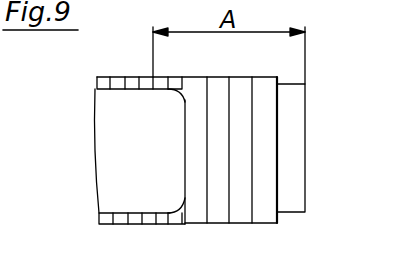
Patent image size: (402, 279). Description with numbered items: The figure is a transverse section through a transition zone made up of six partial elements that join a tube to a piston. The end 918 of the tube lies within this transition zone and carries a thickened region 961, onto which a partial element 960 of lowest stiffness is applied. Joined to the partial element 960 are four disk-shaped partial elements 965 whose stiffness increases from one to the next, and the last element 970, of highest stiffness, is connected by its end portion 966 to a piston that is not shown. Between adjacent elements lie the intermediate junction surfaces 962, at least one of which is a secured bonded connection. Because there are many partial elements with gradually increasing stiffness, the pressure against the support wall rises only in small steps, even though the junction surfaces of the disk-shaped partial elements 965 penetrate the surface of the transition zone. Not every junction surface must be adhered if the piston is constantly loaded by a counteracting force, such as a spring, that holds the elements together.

The end of the tube 918 is at (132, 78).
The partial element of lowest stiffness 960 is at (165, 217).
The thickened region 961 is at (177, 88).
The intermediate junction surfaces 962 is at (257, 196).
The disk-shaped partial elements 965 is at (245, 218).
The end portion 966 is at (305, 182).
The last element of highest stiffness 970 is at (292, 137).